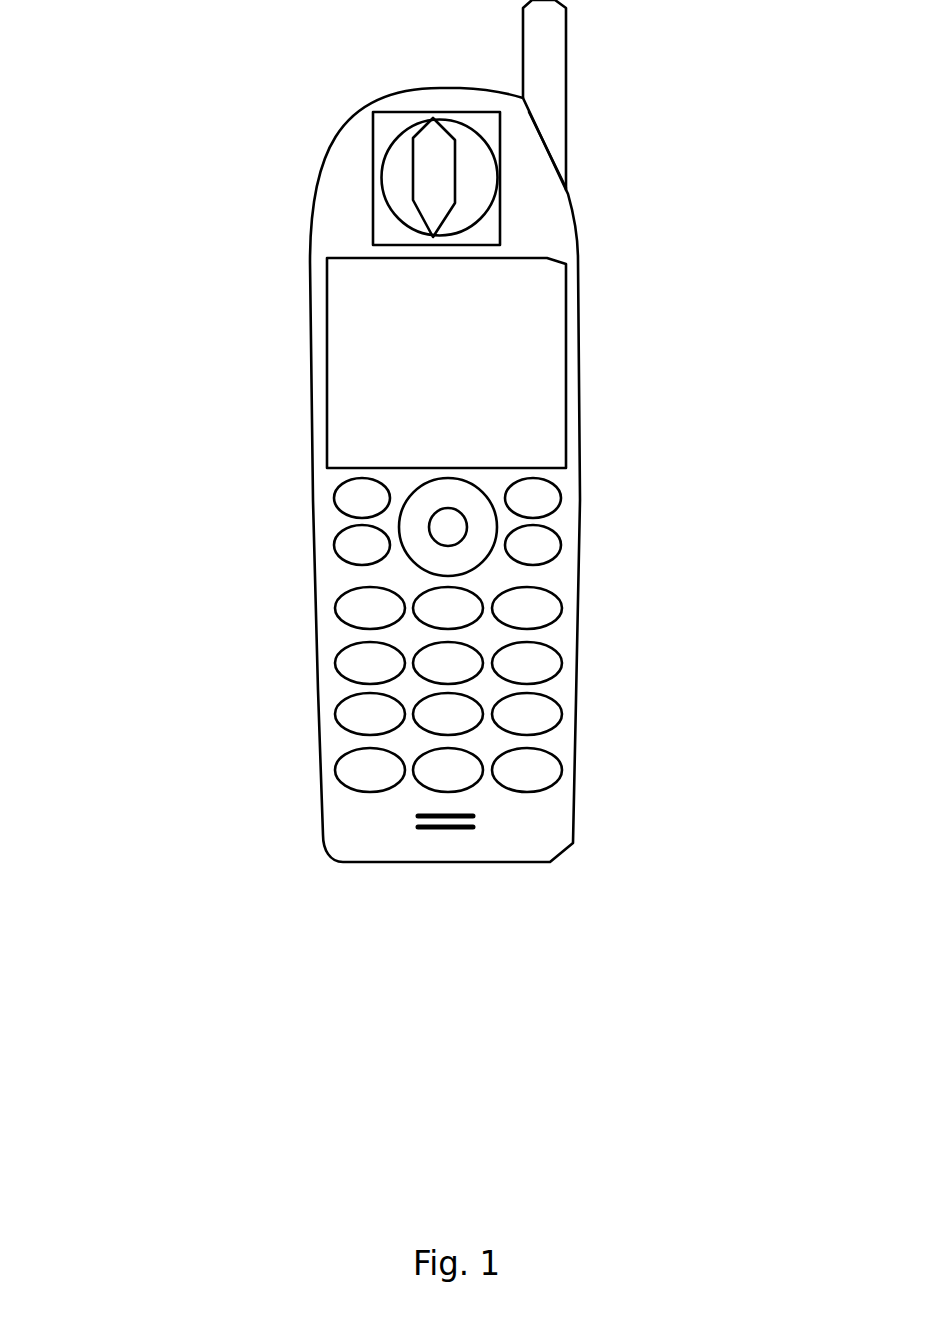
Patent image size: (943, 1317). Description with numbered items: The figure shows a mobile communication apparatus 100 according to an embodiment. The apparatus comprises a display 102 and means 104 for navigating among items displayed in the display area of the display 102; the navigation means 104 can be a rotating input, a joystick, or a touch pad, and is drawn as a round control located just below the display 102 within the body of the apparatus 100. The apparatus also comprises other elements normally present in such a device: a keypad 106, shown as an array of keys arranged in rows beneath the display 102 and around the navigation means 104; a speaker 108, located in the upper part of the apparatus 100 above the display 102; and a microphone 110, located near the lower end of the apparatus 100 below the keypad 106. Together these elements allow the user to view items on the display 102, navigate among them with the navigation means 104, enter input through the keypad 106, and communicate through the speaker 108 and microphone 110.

The mobile communication apparatus 100 is at (245, 535).
The display 102 is at (535, 365).
The means for navigating 104 is at (453, 533).
The keypad 106 is at (410, 660).
The speaker 108 is at (437, 183).
The microphone 110 is at (422, 828).